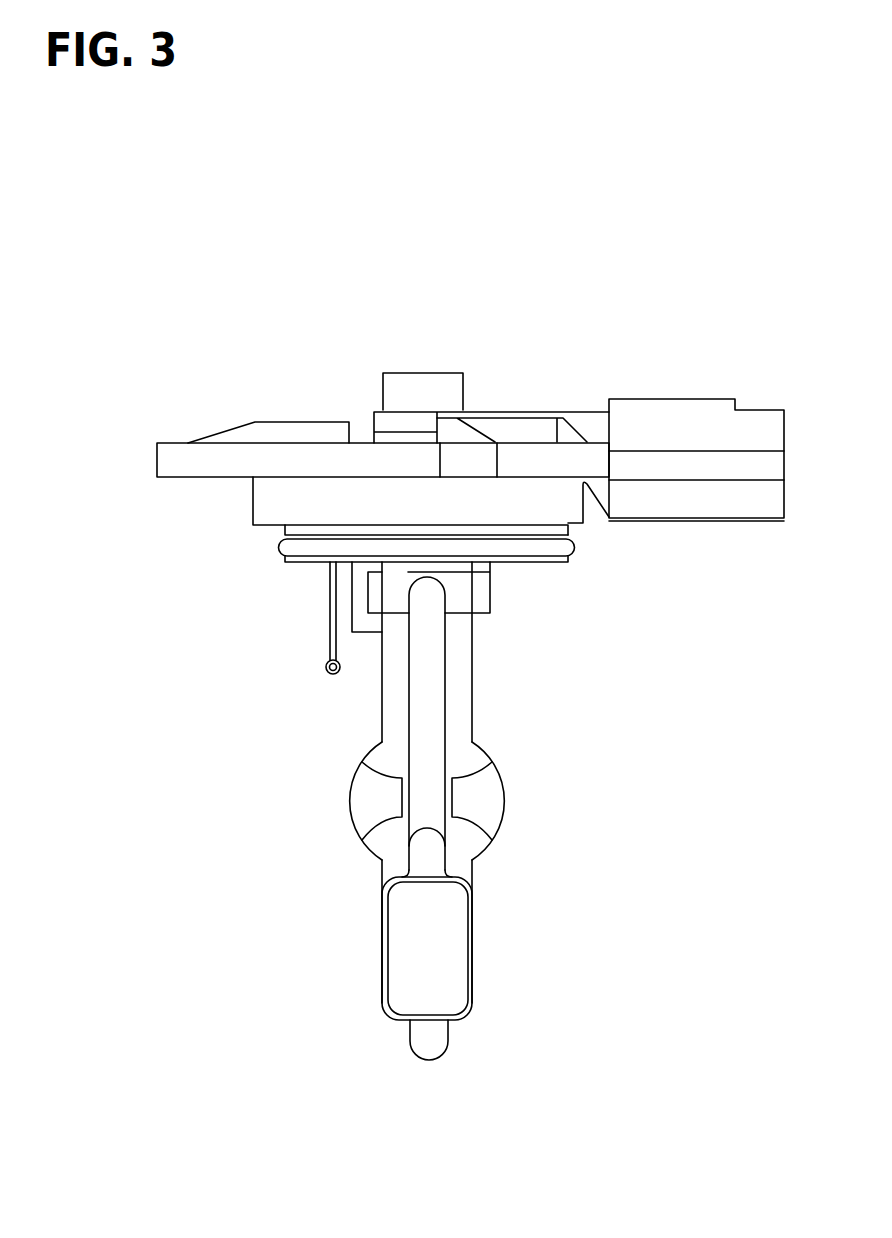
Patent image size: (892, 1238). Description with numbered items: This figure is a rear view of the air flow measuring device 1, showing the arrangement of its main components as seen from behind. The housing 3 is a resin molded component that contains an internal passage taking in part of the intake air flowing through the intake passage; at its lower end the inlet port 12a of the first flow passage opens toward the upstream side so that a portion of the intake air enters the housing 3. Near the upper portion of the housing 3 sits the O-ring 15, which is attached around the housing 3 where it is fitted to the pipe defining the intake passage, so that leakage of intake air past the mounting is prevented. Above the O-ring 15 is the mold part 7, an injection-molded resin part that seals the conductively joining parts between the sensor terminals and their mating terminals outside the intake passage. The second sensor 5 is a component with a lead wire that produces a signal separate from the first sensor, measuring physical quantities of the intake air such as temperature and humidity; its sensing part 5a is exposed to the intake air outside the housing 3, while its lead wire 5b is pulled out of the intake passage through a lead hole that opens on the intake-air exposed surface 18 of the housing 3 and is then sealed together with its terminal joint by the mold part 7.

The air flow measuring device 1 is at (701, 312).
The housing 3 is at (481, 690).
The second sensor 5 is at (218, 603).
The sensing part 5a is at (325, 668).
The lead wire 5b is at (330, 607).
The mold part 7 is at (292, 460).
The inlet port 12a is at (450, 932).
The O-ring 15 is at (566, 548).
The intake-air exposed surface 18 is at (303, 562).